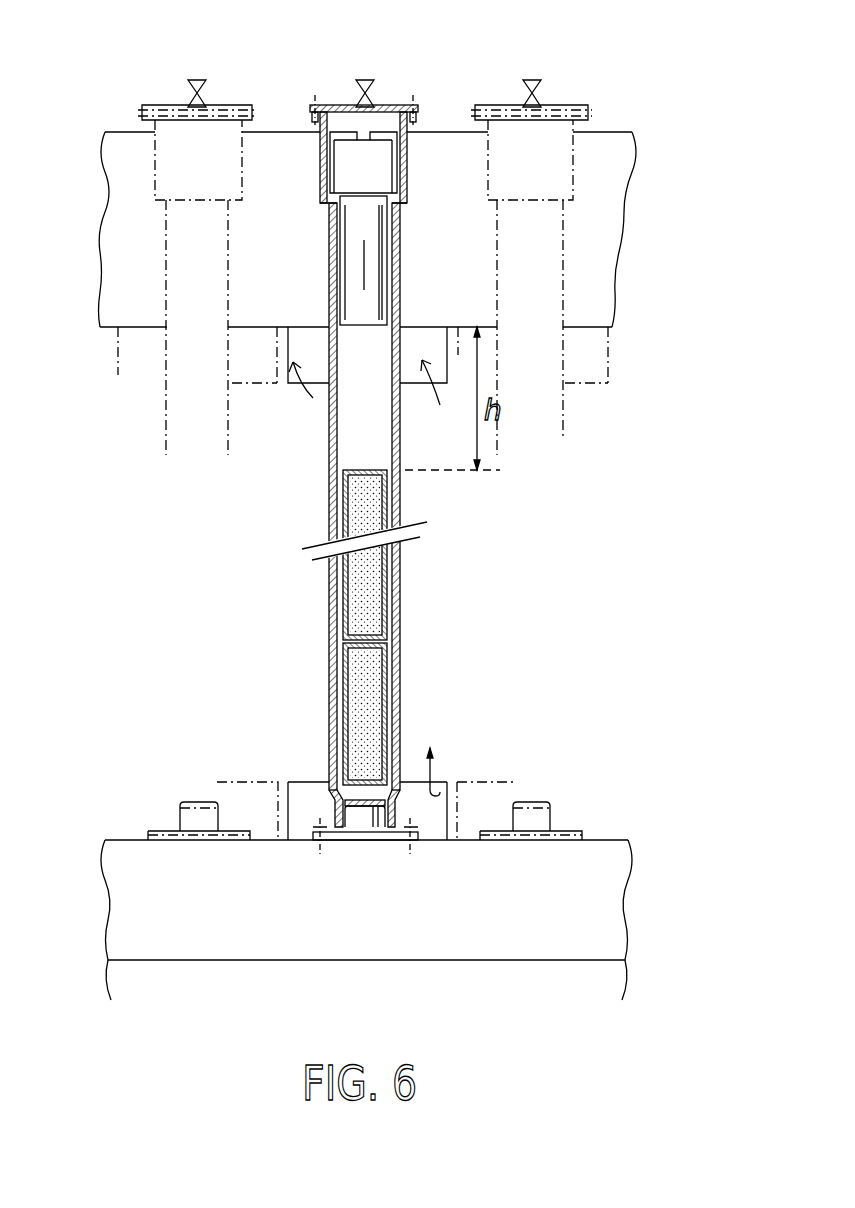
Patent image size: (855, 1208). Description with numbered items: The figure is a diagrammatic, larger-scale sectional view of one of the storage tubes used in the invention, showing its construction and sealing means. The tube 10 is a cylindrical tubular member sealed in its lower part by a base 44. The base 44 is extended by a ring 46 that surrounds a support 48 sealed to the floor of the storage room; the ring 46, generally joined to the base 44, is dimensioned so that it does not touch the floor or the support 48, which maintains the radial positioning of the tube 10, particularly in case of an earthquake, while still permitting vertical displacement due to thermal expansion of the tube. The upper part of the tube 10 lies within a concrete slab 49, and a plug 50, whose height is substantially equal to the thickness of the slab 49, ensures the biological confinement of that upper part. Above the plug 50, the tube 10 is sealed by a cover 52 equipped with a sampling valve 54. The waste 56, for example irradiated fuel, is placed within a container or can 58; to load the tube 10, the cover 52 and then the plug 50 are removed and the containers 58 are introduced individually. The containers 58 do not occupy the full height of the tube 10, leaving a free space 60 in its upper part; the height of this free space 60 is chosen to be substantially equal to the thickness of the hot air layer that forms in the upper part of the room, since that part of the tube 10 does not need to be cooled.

The tube 10 is at (329, 459).
The base 44 is at (347, 805).
The ring 46 is at (395, 800).
The support 48 is at (367, 820).
The concrete slab 49 is at (120, 165).
The plug 50 is at (350, 165).
The cover 52 is at (388, 107).
The sampling valve 54 is at (366, 80).
The waste 56 is at (365, 668).
The container 58 is at (383, 730).
The free space 60 is at (363, 387).